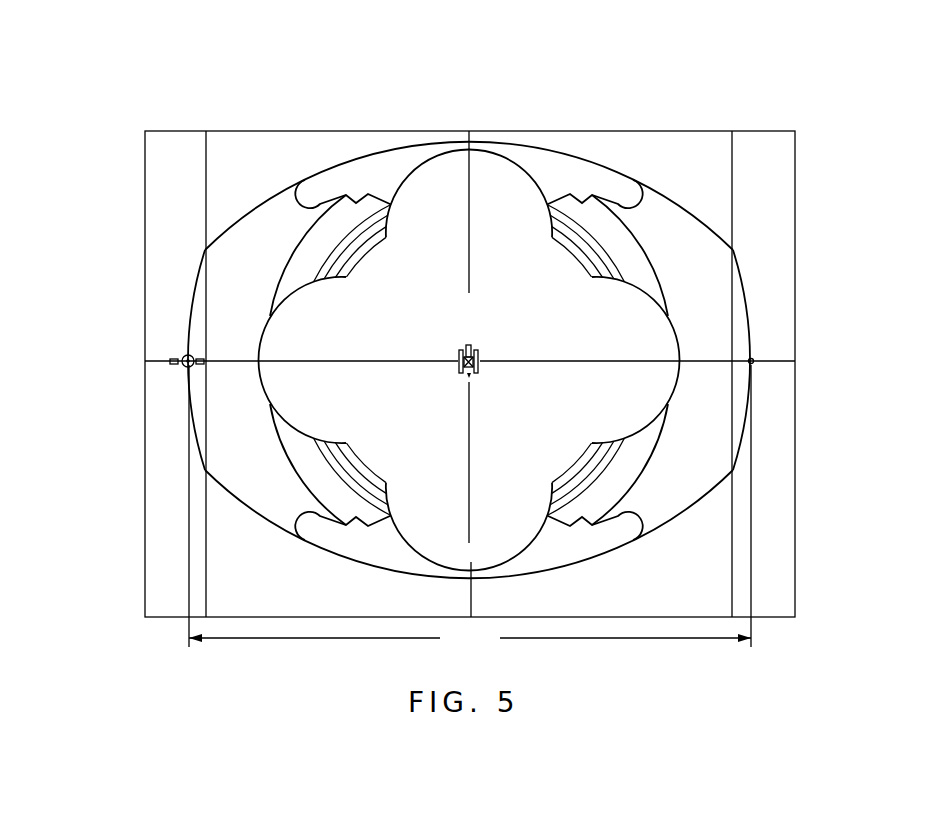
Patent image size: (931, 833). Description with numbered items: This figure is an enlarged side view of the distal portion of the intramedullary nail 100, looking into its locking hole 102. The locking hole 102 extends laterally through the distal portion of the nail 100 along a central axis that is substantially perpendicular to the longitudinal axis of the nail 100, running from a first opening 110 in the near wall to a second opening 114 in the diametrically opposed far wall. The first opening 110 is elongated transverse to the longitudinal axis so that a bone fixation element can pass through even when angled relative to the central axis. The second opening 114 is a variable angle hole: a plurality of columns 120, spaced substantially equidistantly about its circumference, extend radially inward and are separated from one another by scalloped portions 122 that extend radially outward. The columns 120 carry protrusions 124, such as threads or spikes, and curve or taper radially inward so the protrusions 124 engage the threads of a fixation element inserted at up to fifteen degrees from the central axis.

The intramedullary nail 100 is at (262, 118).
The locking hole 102 is at (523, 255).
The first opening 110 is at (283, 200).
The second opening 114 is at (637, 242).
The columns 120 is at (302, 277).
The scalloped portions 122 is at (495, 165).
The protrusions 124 is at (367, 238).